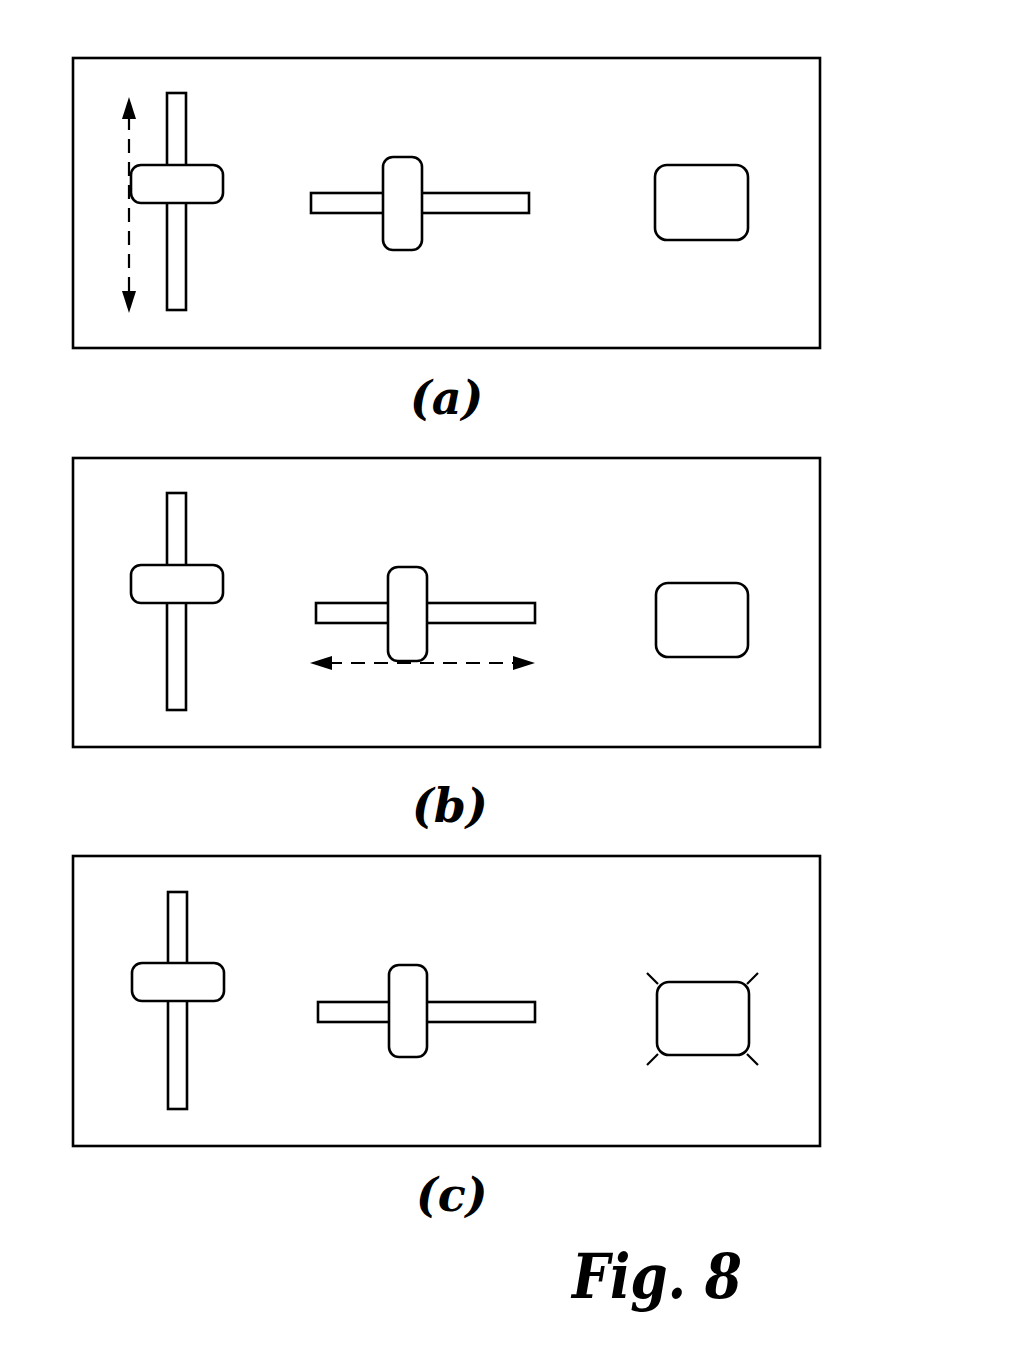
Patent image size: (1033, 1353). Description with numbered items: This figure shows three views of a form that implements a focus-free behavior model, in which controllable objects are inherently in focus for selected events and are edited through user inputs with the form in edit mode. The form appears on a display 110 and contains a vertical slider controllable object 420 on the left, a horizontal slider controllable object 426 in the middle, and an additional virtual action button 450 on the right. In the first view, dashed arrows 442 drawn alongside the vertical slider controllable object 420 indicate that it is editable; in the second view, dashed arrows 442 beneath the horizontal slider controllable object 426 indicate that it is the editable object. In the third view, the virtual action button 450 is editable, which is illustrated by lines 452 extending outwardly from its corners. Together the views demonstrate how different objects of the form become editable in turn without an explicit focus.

The display 110 is at (820, 200).
The vertical slider controllable object 420 is at (202, 113).
The horizontal slider controllable object 426 is at (455, 148).
The dashed arrows 442 is at (130, 275).
The virtual action button 450 is at (721, 214).
The lines extending outwardly 452 is at (675, 1070).